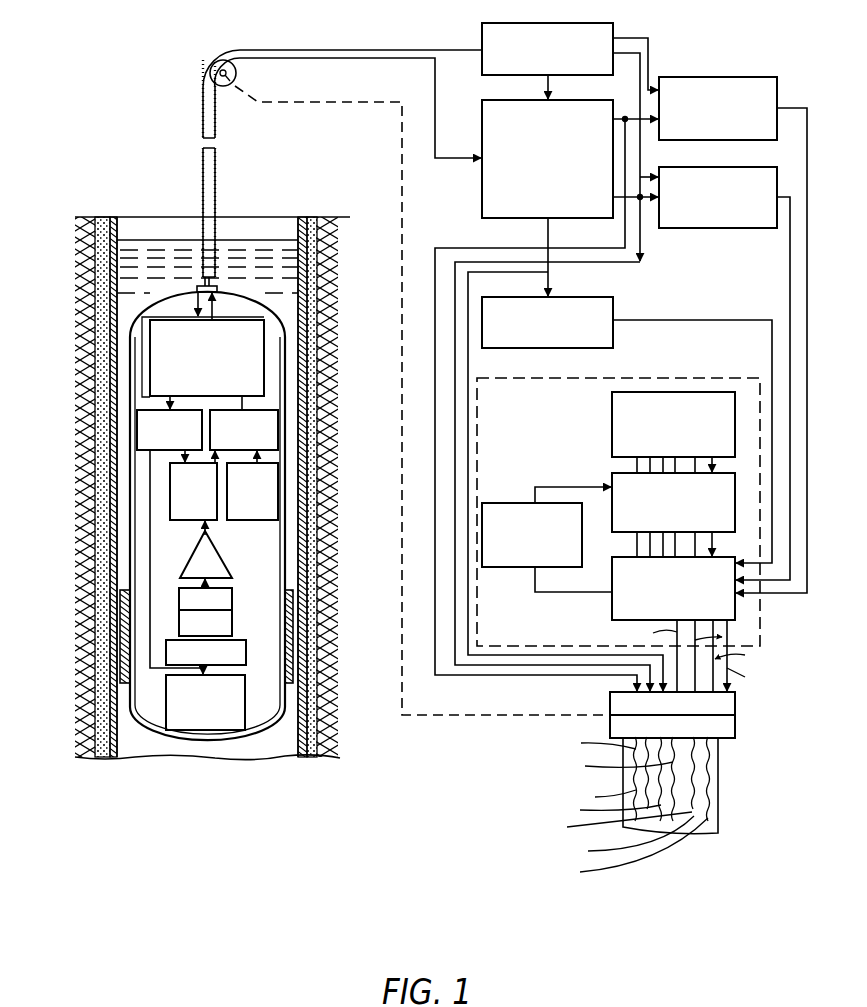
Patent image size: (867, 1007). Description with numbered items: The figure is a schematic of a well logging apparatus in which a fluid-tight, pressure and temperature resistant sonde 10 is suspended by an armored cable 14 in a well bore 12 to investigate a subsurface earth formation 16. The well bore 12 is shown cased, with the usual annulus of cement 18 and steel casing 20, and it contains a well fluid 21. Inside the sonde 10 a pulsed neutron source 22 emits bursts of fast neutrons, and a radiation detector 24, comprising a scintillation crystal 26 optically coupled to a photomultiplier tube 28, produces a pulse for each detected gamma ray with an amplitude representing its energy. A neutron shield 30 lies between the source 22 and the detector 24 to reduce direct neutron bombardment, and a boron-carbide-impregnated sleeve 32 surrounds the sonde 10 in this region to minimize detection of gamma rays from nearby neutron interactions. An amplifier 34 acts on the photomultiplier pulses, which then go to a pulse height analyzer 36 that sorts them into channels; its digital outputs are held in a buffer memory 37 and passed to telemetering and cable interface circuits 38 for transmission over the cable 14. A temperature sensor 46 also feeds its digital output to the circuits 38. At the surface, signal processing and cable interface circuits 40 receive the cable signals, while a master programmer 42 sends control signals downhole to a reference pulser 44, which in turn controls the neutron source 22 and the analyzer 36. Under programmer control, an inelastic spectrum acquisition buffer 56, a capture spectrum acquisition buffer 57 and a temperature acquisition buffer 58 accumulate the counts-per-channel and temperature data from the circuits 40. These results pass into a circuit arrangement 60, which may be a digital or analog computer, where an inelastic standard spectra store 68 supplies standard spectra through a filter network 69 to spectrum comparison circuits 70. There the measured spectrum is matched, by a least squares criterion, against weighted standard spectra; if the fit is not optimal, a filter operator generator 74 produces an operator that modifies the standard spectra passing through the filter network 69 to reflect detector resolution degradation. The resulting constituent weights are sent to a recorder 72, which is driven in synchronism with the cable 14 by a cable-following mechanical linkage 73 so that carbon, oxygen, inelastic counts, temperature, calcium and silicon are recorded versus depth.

The sonde 10 is at (287, 368).
The well bore 12 is at (293, 257).
The armored cable 14 is at (203, 116).
The subsurface earth formation 16 is at (349, 419).
The annulus of cement 18 is at (320, 296).
The steel casing 20 is at (316, 524).
The well fluid 21 is at (153, 253).
The pulsed neutron source 22 is at (246, 703).
The radiation detector 24 is at (209, 609).
The scintillation crystal 26 is at (179, 628).
The photomultiplier tube 28 is at (179, 600).
The neutron shield 30 is at (247, 643).
The boron-carbide-impregnated sleeve 32 is at (290, 612).
The amplifier 34 is at (222, 561).
The pulse height analyzer 36 is at (190, 521).
The buffer memory 37 is at (259, 410).
The telemetering and cable interface circuits 38 is at (247, 320).
The signal processing and cable interface circuits 40 is at (515, 100).
The master programmer 42 is at (515, 23).
The reference pulser 44 is at (180, 450).
The temperature sensor 46 is at (247, 520).
The inelastic spectrum acquisition buffer 56 is at (690, 167).
The capture spectrum acquisition buffer 57 is at (690, 77).
The temperature acquisition buffer 58 is at (515, 297).
The circuit arrangement 60 is at (632, 512).
The inelastic standard spectra store 68 is at (612, 415).
The filter network 69 is at (620, 473).
The spectrum comparison circuits 70 is at (612, 568).
The recorder 72 is at (610, 702).
The cable-following mechanical linkage 73 is at (404, 218).
The filter operator generator 74 is at (516, 503).